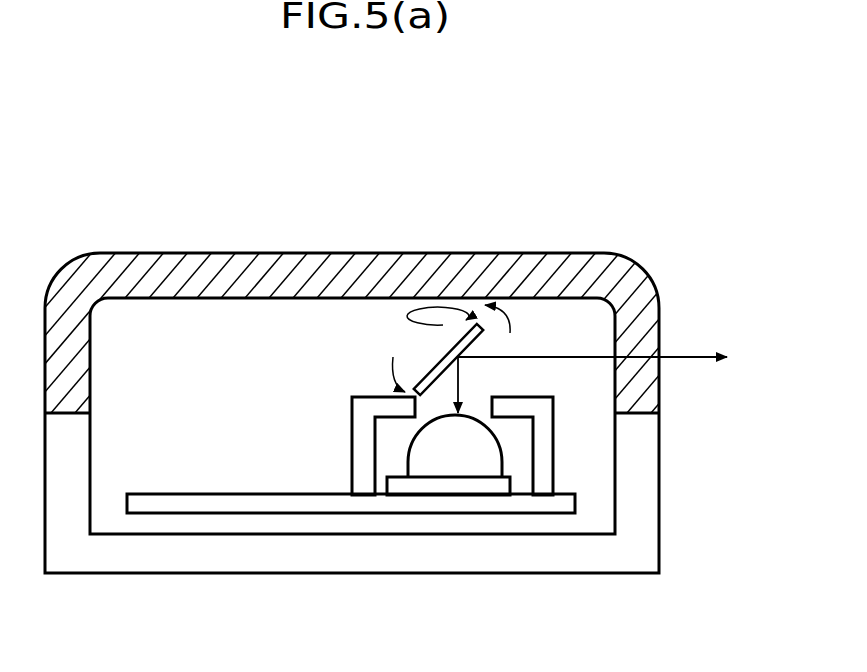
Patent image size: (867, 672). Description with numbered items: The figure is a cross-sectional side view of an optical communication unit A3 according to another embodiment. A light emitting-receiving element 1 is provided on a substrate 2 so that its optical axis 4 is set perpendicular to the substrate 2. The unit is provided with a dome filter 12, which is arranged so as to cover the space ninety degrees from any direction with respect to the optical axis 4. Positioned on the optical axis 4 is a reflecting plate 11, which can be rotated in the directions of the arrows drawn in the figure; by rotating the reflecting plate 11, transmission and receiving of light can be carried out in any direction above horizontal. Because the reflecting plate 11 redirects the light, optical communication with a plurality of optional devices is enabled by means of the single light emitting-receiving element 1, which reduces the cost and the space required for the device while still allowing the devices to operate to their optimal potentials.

The light emitting-receiving element 1 is at (466, 460).
The substrate 2 is at (225, 515).
The optical axis 4 is at (680, 357).
The reflecting plate 11 is at (477, 327).
The dome filter 12 is at (643, 380).
The optical communication unit A3 is at (655, 226).